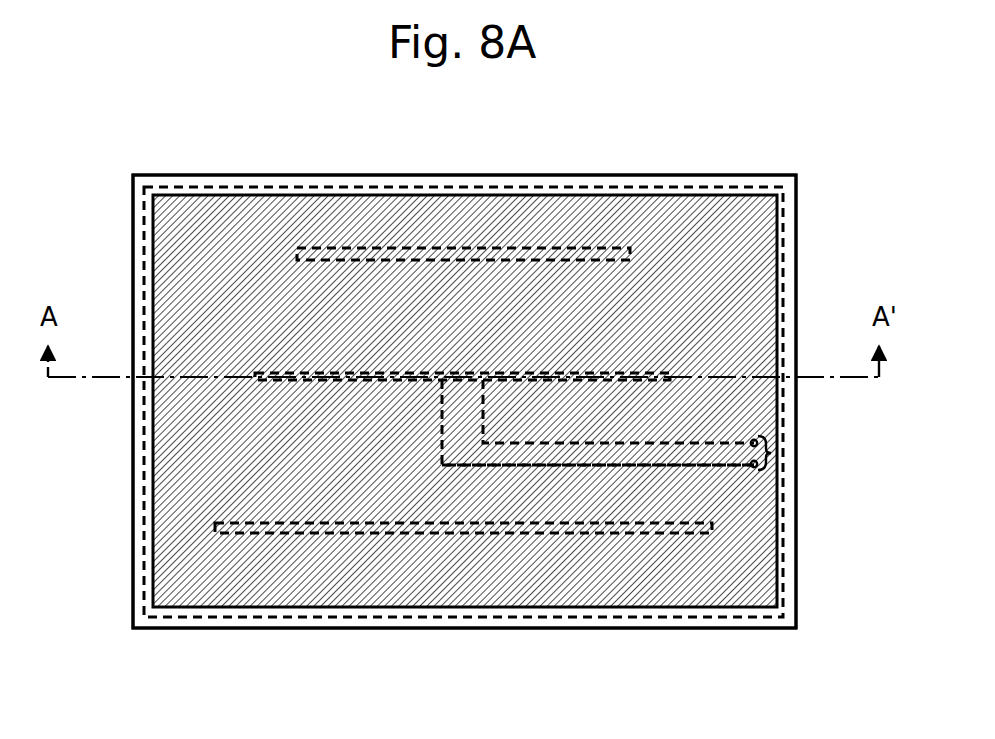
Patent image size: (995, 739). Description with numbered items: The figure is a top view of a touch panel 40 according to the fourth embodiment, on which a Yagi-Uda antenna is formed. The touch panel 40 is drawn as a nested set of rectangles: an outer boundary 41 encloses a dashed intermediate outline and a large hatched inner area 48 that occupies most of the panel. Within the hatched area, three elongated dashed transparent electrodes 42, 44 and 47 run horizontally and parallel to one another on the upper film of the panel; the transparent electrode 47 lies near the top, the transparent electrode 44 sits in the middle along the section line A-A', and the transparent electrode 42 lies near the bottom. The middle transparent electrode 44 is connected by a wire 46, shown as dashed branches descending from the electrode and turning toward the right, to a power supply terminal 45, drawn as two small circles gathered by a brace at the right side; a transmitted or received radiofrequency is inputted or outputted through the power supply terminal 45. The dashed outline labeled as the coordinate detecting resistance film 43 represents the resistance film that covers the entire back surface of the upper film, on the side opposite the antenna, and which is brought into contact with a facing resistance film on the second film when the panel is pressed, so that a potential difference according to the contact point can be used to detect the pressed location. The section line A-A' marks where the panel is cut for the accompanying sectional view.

The touch panel 40 is at (209, 153).
The outer boundary / substrate edge 41 is at (625, 630).
The transparent electrode 42 is at (298, 602).
The coordinate detecting resistance film 43 is at (478, 620).
The transparent electrode 44 is at (635, 376).
The power supply terminal 45 is at (770, 452).
The wire 46 is at (690, 480).
The transparent electrode 47 is at (537, 257).
The hatched active region 48 is at (390, 213).